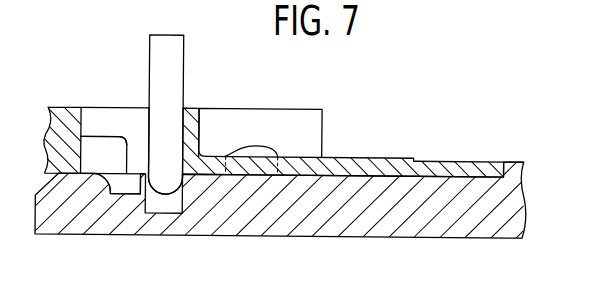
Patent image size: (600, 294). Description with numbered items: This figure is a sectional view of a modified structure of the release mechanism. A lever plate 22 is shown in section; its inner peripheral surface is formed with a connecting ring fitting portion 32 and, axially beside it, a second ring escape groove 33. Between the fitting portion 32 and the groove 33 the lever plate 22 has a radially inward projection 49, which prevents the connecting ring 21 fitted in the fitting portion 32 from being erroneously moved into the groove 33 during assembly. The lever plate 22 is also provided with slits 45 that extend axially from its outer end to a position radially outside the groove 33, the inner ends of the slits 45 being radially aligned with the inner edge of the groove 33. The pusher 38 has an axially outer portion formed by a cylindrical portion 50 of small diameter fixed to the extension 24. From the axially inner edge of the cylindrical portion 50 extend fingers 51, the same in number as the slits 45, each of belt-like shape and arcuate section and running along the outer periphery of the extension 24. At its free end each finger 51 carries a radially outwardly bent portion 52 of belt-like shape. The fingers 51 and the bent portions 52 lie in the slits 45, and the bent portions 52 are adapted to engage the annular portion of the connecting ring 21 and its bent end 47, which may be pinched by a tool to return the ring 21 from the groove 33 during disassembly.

The connecting ring 21 is at (158, 193).
The lever plate 22 is at (63, 106).
The extension 24 is at (358, 237).
The connecting ring fitting portion 32 is at (170, 160).
The second ring escape groove 33 is at (113, 143).
The pusher 38 is at (432, 160).
The slits 45 is at (290, 118).
The bent end 47 is at (179, 49).
The radially inward projection 49 is at (133, 173).
The cylindrical portion 50 is at (470, 163).
The finger 51 is at (339, 159).
The radially outwardly bent portion 52 is at (191, 110).